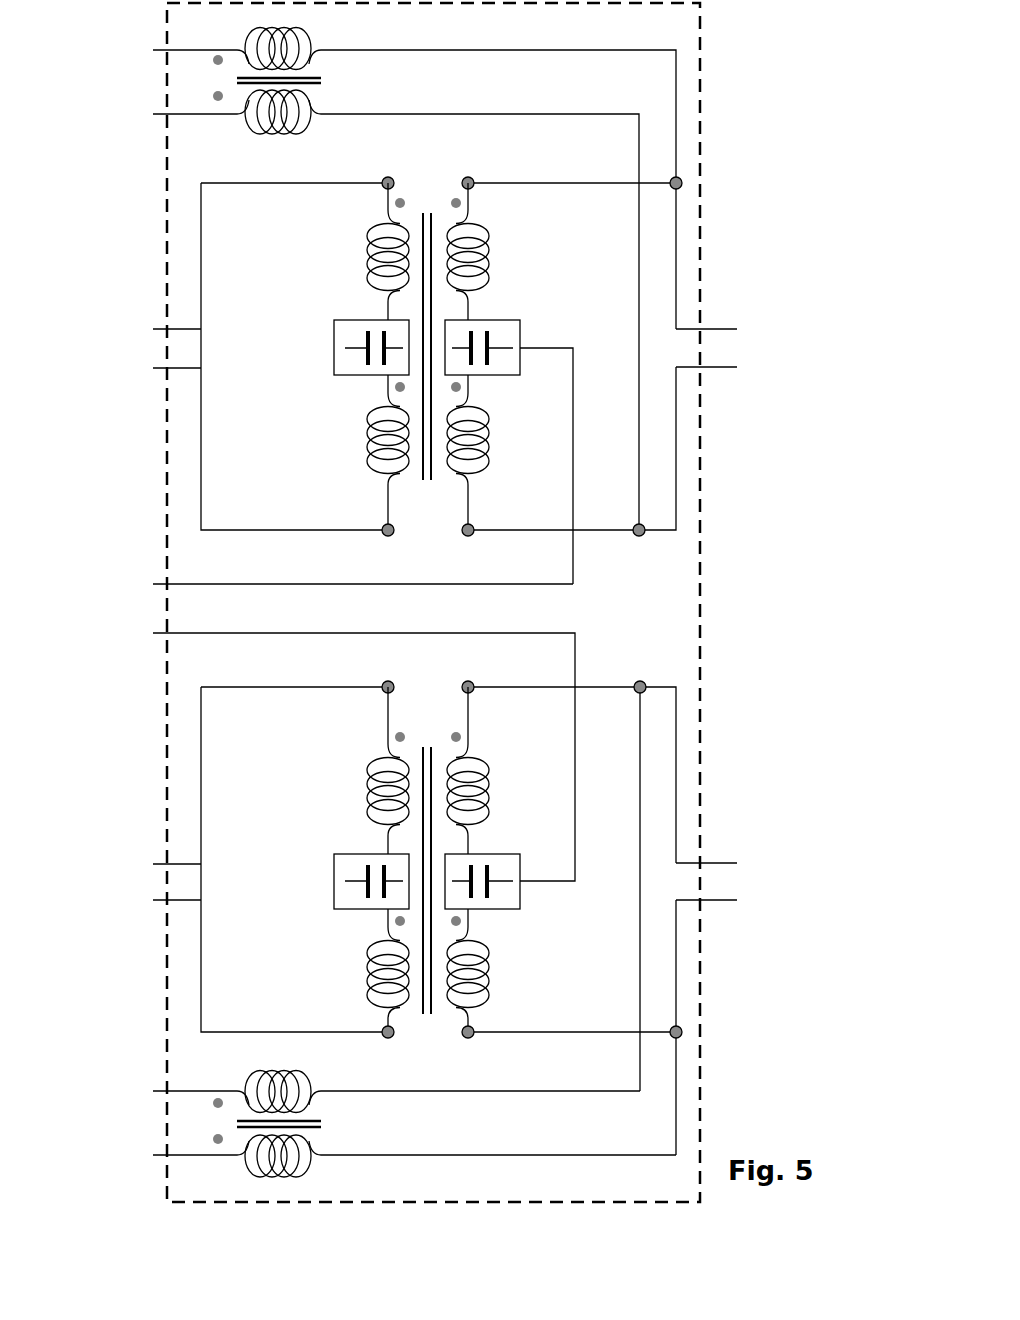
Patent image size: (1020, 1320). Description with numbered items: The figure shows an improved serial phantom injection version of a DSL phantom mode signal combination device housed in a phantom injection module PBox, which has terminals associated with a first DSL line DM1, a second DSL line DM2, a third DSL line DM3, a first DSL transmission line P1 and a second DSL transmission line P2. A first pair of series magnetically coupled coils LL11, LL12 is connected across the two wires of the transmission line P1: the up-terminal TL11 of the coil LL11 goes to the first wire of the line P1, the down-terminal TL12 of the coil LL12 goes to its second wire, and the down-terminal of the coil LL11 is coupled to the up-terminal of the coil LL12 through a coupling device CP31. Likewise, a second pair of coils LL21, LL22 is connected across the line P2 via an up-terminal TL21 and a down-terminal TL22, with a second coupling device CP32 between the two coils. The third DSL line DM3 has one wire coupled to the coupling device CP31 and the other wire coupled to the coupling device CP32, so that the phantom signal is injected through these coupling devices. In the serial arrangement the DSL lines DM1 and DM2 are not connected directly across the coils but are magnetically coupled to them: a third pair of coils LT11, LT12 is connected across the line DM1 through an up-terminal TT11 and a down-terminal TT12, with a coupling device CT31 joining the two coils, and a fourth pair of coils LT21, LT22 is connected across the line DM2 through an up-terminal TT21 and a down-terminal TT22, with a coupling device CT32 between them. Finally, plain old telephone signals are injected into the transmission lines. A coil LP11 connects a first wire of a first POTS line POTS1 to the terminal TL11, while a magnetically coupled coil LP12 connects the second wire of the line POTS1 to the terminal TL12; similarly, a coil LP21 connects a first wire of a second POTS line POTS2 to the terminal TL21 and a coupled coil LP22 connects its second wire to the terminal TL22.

The phantom injection module PBox is at (484, 602).
The first POTS line POTS1 is at (141, 82).
The second POTS line POTS2 is at (141, 1123).
The coil LP11 is at (444, 170).
The coil LP12 is at (426, 305).
The coil LP21 is at (426, 1101).
The coil LP22 is at (444, 1164).
The up-terminal of first coil LT11 TT11 is at (360, 165).
The down-terminal of second coil LT12 TT12 is at (371, 550).
The up-terminal of first coil LL11 TL11 is at (564, 165).
The down-terminal of second coil LL12 TL12 is at (561, 471).
The up-terminal of first coil LT21 TT21 is at (371, 667).
The down-terminal of second coil LT22 TT22 is at (383, 1050).
The up-terminal of first coil LL21 TL21 is at (561, 866).
The down-terminal of second coil LL22 TL22 is at (560, 1027).
The first coil of third pair LT11 is at (354, 251).
The second coil of third pair LT12 is at (354, 452).
The first coil of first pair LL11 is at (491, 331).
The second coil of first pair LL12 is at (503, 452).
The first coil of fourth pair LT21 is at (348, 770).
The second coil of fourth pair LT22 is at (348, 970).
The first coil of second pair LL21 is at (490, 850).
The second coil of second pair LL22 is at (502, 970).
The coupling device CT31 is at (330, 347).
The coupling device CP31 is at (520, 449).
The coupling device CT32 is at (331, 881).
The second coupling device CP32 is at (526, 887).
The first DSL line DM1 is at (236, 356).
The second DSL line DM2 is at (235, 859).
The third DSL line DM3 is at (328, 732).
The first DSL transmission line P1 is at (731, 348).
The second DSL transmission line P2 is at (731, 881).